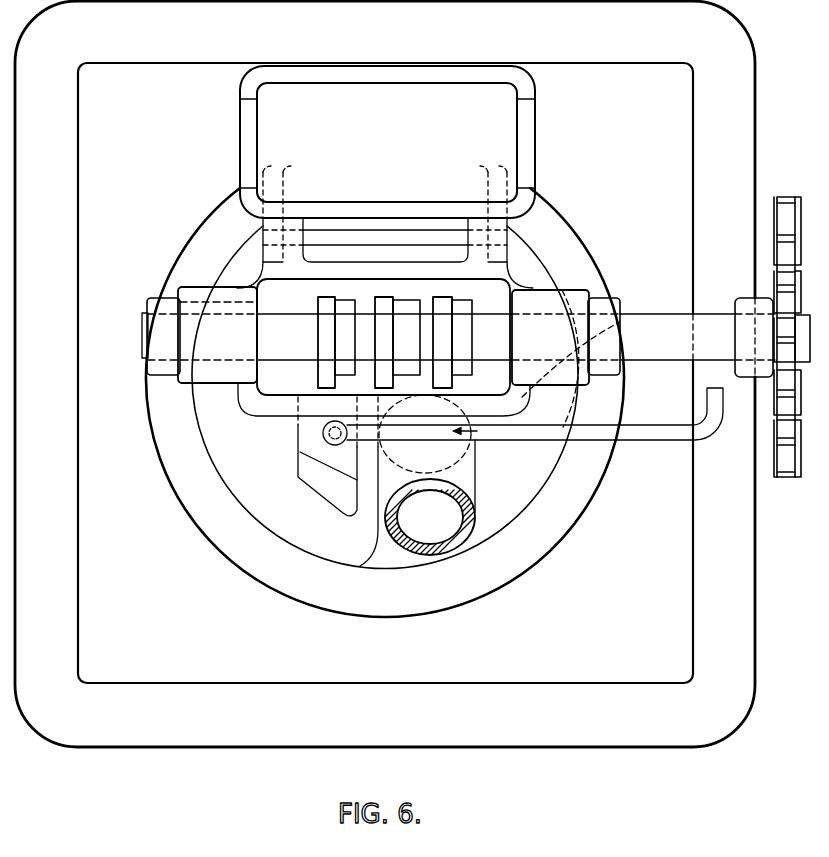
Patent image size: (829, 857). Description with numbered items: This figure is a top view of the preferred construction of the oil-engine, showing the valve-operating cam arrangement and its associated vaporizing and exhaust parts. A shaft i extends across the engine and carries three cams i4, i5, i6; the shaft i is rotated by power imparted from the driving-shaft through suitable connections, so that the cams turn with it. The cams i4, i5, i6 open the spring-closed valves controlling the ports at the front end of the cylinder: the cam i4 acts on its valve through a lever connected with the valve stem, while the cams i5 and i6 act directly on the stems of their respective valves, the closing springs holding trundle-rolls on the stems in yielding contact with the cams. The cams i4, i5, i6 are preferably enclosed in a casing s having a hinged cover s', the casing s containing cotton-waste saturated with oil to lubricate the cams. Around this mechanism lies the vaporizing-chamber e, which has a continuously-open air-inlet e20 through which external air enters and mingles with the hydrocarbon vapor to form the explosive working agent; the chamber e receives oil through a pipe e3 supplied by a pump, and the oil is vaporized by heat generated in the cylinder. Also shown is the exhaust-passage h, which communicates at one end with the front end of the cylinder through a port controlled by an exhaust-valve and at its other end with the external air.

The hinged cover s' is at (362, 142).
The casing s is at (385, 308).
The shaft i is at (657, 321).
The cam i5 is at (323, 311).
The cam i6 is at (383, 313).
The cam i4 is at (440, 301).
The vaporizing-chamber e is at (213, 450).
The continuously-open air-inlet e20 is at (317, 452).
The pipe e3 is at (526, 430).
The exhaust-passage h is at (455, 518).